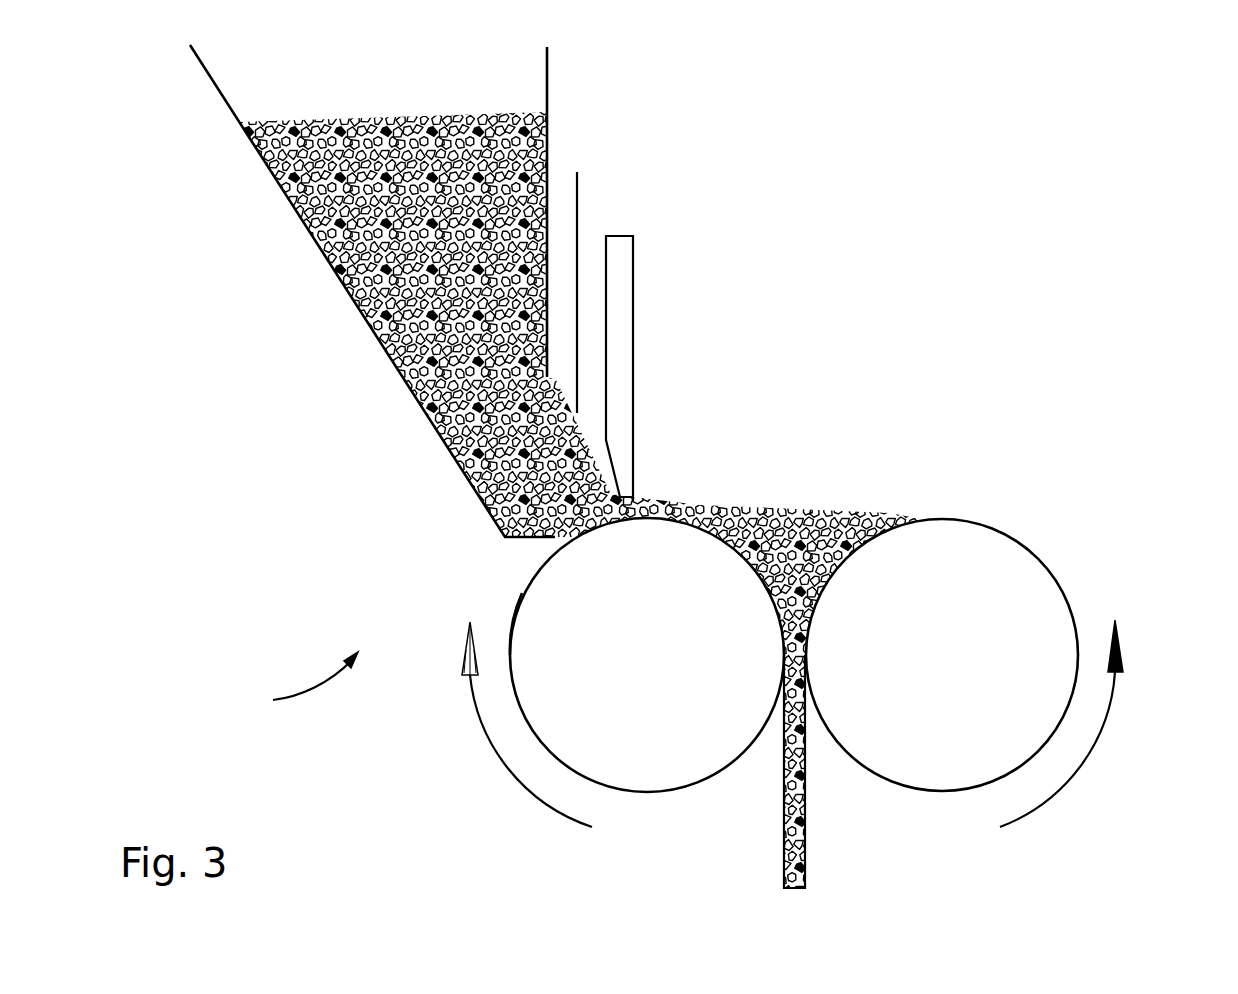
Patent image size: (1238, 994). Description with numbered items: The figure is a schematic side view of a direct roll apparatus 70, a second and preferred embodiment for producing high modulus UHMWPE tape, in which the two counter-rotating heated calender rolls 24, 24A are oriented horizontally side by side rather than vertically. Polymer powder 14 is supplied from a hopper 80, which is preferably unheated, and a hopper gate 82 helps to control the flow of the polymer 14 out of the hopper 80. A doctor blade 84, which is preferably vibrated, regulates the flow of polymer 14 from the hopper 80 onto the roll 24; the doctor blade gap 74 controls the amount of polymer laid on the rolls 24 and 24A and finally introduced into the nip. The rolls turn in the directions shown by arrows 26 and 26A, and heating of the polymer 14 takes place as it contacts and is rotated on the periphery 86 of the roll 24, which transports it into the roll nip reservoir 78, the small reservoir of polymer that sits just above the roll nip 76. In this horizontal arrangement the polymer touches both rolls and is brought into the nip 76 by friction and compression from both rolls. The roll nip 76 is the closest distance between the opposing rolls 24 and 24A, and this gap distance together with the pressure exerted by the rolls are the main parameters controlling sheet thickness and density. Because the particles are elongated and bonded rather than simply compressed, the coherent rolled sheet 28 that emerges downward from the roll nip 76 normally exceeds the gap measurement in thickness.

The polymer powder 14 is at (405, 115).
The hopper 80 is at (222, 94).
The hopper gate 82 is at (578, 182).
The doctor blade 84 is at (620, 248).
The doctor blade gap 74 is at (643, 497).
The roll nip reservoir 78 is at (783, 550).
The roll nip 76 is at (798, 650).
The heated calender roll 24 is at (663, 665).
The heated calender roll 24A is at (966, 665).
The periphery of roll 86 is at (522, 593).
The arrow indicating rotation direction of roll 26 is at (490, 742).
The arrow indicating rotation direction of roll 26A is at (1090, 752).
The rolled sheet 28 is at (784, 822).
The direct roll apparatus 70 is at (299, 685).